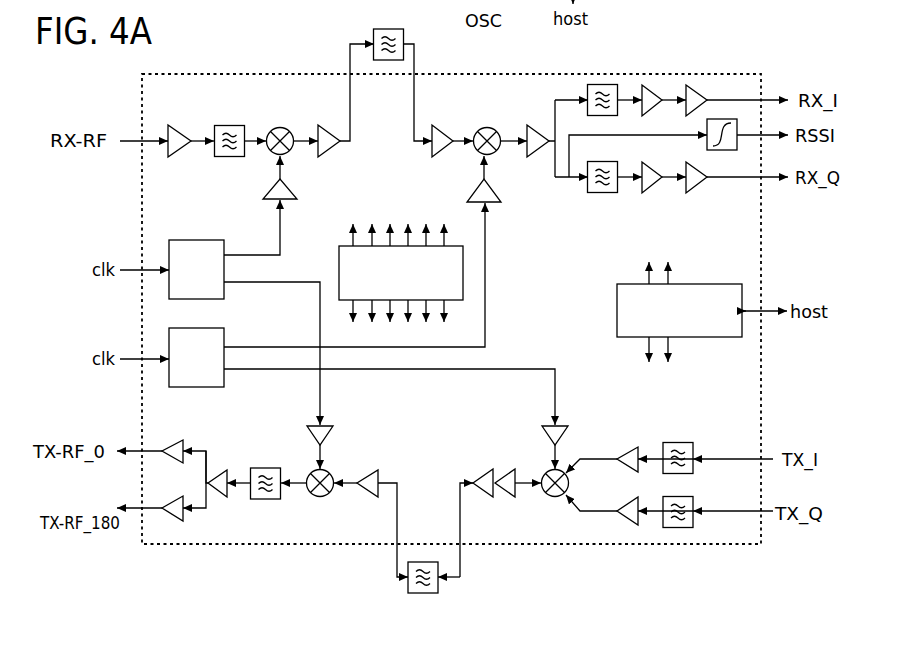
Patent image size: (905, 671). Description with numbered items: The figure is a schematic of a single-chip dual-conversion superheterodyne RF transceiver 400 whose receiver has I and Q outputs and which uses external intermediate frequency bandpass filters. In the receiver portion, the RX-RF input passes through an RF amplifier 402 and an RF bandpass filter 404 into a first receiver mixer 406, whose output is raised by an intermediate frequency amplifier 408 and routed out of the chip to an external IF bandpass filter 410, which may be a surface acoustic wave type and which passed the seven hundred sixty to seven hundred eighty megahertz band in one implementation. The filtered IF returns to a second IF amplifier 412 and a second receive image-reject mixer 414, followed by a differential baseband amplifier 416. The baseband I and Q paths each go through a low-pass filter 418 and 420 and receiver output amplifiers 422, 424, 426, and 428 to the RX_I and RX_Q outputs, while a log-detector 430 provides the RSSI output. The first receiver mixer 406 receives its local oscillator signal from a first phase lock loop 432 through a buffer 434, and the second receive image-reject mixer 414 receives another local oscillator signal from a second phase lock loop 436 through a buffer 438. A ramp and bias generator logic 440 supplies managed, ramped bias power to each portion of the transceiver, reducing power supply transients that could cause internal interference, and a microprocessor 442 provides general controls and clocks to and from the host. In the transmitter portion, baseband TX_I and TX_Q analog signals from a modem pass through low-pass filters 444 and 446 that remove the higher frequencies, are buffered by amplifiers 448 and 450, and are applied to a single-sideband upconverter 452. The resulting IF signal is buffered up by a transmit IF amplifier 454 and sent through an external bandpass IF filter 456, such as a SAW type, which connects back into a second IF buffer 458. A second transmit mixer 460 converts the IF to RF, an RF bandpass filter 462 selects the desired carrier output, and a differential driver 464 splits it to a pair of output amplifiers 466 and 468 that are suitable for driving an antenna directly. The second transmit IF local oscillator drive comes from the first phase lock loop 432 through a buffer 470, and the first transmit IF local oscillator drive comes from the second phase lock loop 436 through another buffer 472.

The dual-conversion superheterodyne RF transceiver 400 is at (282, 50).
The RF amplifier 402 is at (181, 126).
The RF bandpass filter 404 is at (228, 125).
The first receiver mixer 406 is at (278, 128).
The intermediate frequency amplifier 408 is at (335, 151).
The external IF bandpass filter 410 is at (380, 29).
The second IF amplifier 412 is at (440, 126).
The second receive image-reject mixer 414 is at (485, 128).
The differential baseband amplifier 416 is at (530, 152).
The low-pass filter 418 is at (600, 84).
The low-pass filter 420 is at (593, 193).
The receiver output amplifier 422 is at (648, 86).
The receiver output amplifier 424 is at (694, 86).
The receiver output amplifier 426 is at (648, 193).
The receiver output amplifier 428 is at (694, 193).
The log-detector 430 is at (715, 150).
The first phase lock loop (PLL1) 432 is at (183, 240).
The buffer 434 is at (289, 188).
The second phase lock loop (PLL2) 436 is at (215, 328).
The buffer 438 is at (474, 192).
The ramp and bias generator logic 440 is at (339, 262).
The microprocessor 442 is at (617, 313).
The low-pass filter 444 is at (676, 443).
The low-pass filter 446 is at (688, 497).
The amplifier 448 is at (627, 448).
The amplifier 450 is at (628, 498).
The single-sideband upconverter 452 is at (551, 497).
The transmit IF amplifier 454 is at (486, 469).
The external bandpass IF filter 456 is at (425, 594).
The second IF buffer 458 is at (368, 470).
The second transmit mixer 460 is at (317, 497).
The RF bandpass filter 462 is at (262, 499).
The differential driver 464 is at (222, 470).
The output amplifier 466 is at (170, 440).
The output amplifier 468 is at (170, 518).
The buffer 470 is at (329, 433).
The buffer 472 is at (561, 430).